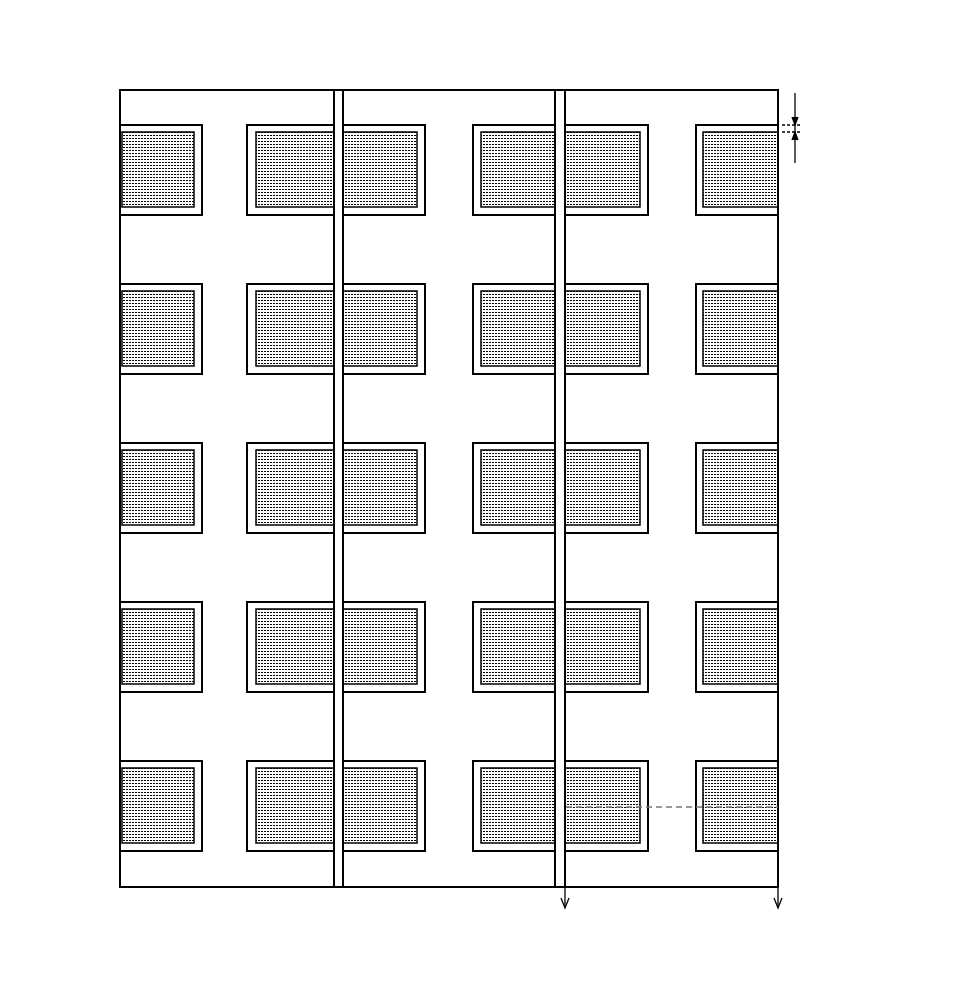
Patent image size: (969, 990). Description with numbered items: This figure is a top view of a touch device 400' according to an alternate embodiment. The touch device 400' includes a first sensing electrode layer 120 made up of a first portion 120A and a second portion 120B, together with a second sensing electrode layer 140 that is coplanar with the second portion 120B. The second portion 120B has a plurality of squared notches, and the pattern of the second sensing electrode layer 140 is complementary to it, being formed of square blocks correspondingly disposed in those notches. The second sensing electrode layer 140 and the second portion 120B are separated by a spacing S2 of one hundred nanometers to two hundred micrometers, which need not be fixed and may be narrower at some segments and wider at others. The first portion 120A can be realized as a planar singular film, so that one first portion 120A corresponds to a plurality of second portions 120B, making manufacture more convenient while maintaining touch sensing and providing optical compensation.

The touch device 400' is at (438, 498).
The first sensing electrode layer 120 is at (700, 52).
The first portion 120A is at (560, 96).
The second portion 120B is at (665, 112).
The second sensing electrode layer 140 is at (766, 170).
The spacing S2 is at (806, 128).